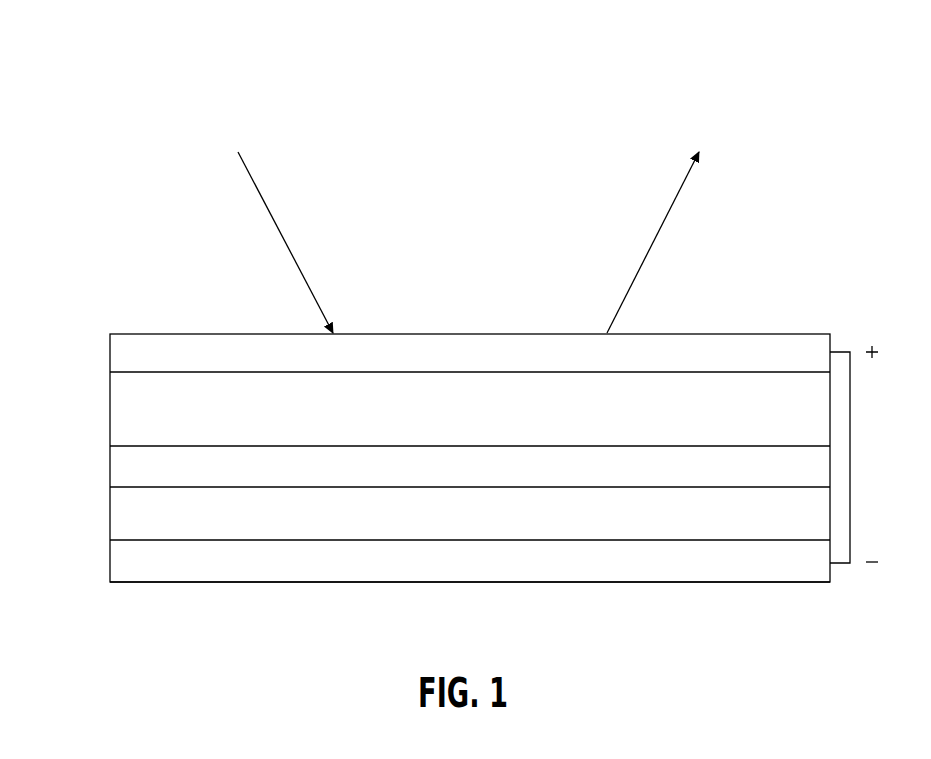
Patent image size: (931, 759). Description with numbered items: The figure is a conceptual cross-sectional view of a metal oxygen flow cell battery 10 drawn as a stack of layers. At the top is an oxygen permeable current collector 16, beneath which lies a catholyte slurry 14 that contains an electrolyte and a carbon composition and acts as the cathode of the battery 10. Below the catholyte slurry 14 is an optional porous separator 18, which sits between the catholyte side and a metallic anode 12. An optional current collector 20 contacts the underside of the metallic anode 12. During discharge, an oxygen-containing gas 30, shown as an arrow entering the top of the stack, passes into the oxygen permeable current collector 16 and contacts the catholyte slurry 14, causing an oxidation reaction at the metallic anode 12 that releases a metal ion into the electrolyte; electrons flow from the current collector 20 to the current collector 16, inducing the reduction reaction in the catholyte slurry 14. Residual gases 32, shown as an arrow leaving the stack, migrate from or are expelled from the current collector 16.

The metal oxygen flow cell battery 10 is at (479, 62).
The metallic anode 12 is at (120, 515).
The catholyte slurry 14 is at (120, 408).
The oxygen permeable current collector 16 is at (120, 353).
The porous separator 18 is at (120, 465).
The current collector 20 is at (120, 563).
The oxygen-containing gas 30 is at (287, 243).
The residual gases 32 is at (650, 245).